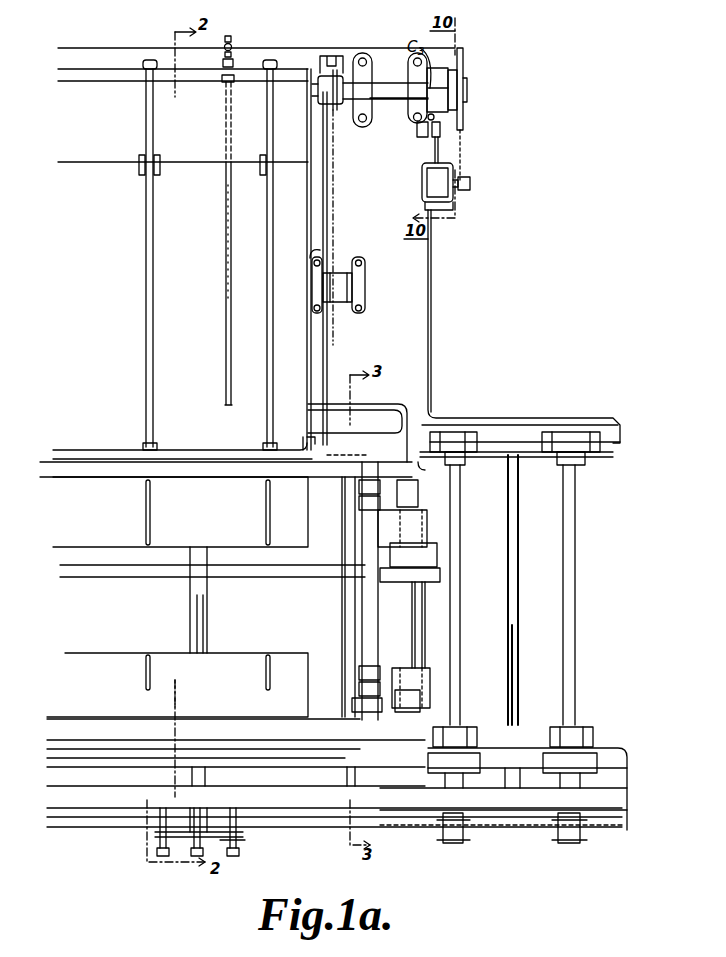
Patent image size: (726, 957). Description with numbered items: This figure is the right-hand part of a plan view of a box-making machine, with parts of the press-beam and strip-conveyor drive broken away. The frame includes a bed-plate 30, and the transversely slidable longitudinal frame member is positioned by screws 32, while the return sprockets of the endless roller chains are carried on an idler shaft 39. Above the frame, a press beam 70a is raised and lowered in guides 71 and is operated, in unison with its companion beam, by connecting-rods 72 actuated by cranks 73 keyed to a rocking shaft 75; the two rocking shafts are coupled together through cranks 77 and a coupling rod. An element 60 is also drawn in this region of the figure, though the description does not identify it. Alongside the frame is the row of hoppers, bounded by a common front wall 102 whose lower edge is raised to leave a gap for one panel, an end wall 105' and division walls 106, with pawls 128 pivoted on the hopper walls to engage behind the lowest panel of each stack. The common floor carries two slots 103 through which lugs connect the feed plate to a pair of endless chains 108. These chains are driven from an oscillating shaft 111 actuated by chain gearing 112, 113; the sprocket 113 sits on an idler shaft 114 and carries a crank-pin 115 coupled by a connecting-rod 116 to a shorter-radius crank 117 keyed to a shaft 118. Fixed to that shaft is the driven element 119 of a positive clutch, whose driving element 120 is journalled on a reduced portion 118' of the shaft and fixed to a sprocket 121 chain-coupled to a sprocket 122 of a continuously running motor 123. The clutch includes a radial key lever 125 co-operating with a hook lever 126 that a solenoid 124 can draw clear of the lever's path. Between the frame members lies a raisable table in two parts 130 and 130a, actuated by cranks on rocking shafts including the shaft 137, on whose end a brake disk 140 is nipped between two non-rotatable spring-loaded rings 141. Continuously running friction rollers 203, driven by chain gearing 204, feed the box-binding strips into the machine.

The front wall 102 is at (79, 450).
The slot 103 is at (226, 384).
The end wall 105' is at (341, 265).
The division wall 106 is at (154, 111).
The endless chain 108 is at (228, 224).
The oscillating shaft 111 is at (314, 80).
The chain gearing 112 is at (336, 106).
The sprocket 113 is at (336, 236).
The idler shaft 114 is at (366, 286).
The crank-pin 115 is at (311, 260).
The connecting-rod 116 is at (323, 229).
The crank 117 is at (345, 48).
The shaft 118 is at (385, 90).
The reduced portion 118' is at (471, 99).
The driven element 119 is at (427, 98).
The driving element 120 is at (446, 83).
The sprocket 121 is at (463, 122).
The sprocket 122 is at (464, 178).
The motor 123 is at (455, 200).
The solenoid 124 is at (432, 187).
The radial key lever 125 is at (434, 120).
The hook lever 126 is at (432, 136).
The pawl 128 is at (140, 172).
The table part 130 is at (203, 527).
The table part 130a is at (176, 685).
The rocking shaft 137 is at (208, 623).
The brake disk 140 is at (232, 850).
The spring-loaded ring 141 is at (158, 834).
The bed-plate 30 is at (427, 321).
The screw 32 is at (516, 645).
The idler shaft 39 is at (345, 606).
The rod 60 is at (436, 480).
The press beam 70a is at (236, 752).
The guide 71 is at (420, 483).
The connecting-rod 72 is at (362, 498).
The crank 73 is at (420, 516).
The rocking shaft 75 is at (426, 614).
The crank 77 is at (438, 560).
The friction roller 203 is at (470, 465).
The chain gearing 204 is at (560, 838).